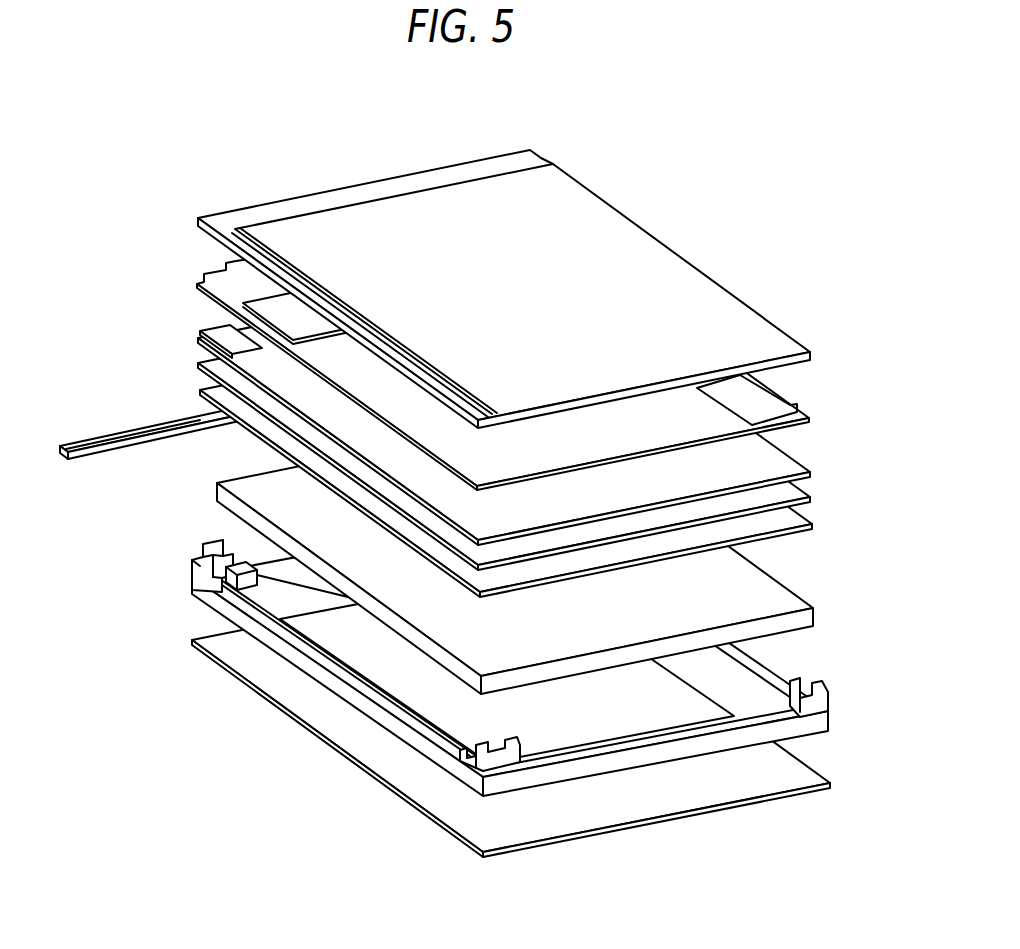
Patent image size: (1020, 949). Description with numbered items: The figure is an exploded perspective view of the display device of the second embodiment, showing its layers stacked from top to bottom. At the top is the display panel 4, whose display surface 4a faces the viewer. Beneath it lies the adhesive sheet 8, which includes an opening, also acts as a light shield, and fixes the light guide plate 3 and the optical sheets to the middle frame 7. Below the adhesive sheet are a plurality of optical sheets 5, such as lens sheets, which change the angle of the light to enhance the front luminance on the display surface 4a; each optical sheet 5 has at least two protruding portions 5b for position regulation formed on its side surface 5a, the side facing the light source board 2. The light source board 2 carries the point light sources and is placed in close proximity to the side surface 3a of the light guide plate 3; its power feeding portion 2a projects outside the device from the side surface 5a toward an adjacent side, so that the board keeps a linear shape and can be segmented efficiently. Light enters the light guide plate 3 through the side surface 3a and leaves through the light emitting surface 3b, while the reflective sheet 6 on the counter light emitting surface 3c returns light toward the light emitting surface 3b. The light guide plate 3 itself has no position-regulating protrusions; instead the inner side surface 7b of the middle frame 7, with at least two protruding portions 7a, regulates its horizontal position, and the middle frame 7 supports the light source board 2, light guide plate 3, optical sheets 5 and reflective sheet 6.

The light source board 2 is at (110, 455).
The power feeding portion 2a is at (108, 438).
The light guide plate 3 is at (519, 559).
The side surface 3a is at (240, 477).
The light emitting surface 3b is at (765, 582).
The counter light emitting surface 3c is at (800, 630).
The display panel 4 is at (504, 280).
The display surface 4a is at (398, 198).
The optical sheet 5 is at (495, 432).
The side surface 5a is at (262, 347).
The protruding portion 5b is at (210, 390).
The reflective sheet 6 is at (652, 805).
The middle frame 7 is at (822, 720).
The protruding portion 7a is at (235, 570).
The inner side surface 7b is at (235, 590).
The adhesive sheet 8 is at (785, 395).